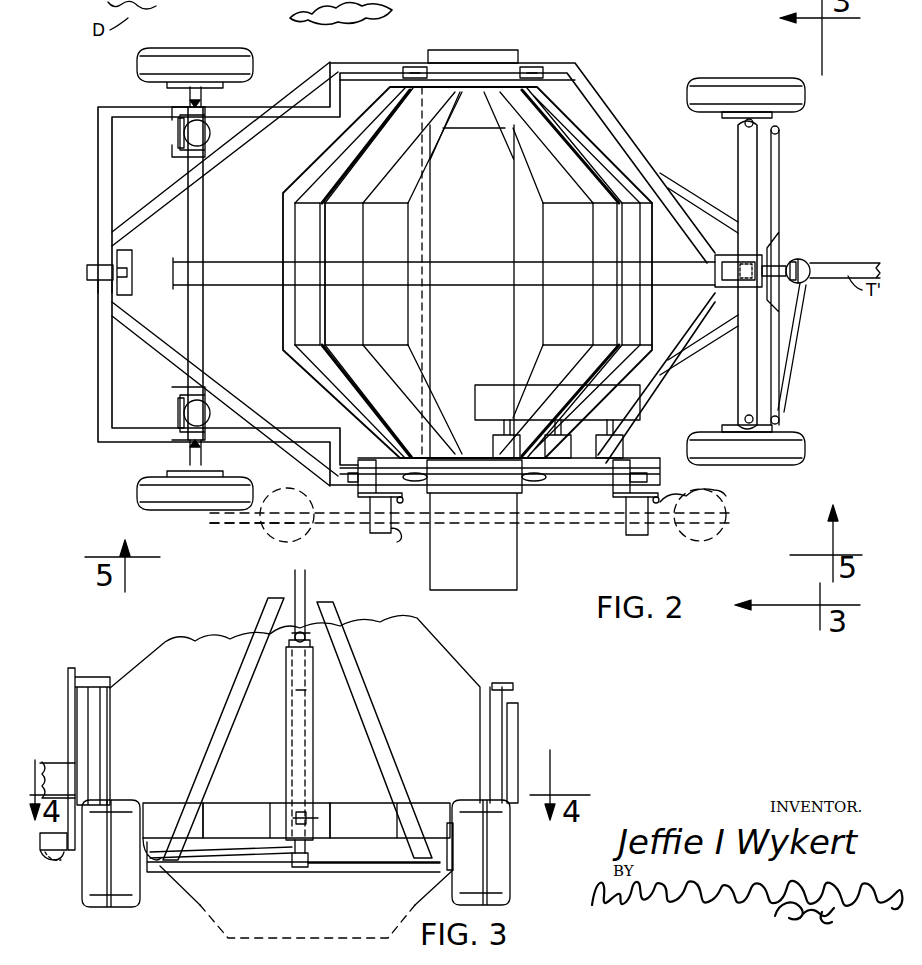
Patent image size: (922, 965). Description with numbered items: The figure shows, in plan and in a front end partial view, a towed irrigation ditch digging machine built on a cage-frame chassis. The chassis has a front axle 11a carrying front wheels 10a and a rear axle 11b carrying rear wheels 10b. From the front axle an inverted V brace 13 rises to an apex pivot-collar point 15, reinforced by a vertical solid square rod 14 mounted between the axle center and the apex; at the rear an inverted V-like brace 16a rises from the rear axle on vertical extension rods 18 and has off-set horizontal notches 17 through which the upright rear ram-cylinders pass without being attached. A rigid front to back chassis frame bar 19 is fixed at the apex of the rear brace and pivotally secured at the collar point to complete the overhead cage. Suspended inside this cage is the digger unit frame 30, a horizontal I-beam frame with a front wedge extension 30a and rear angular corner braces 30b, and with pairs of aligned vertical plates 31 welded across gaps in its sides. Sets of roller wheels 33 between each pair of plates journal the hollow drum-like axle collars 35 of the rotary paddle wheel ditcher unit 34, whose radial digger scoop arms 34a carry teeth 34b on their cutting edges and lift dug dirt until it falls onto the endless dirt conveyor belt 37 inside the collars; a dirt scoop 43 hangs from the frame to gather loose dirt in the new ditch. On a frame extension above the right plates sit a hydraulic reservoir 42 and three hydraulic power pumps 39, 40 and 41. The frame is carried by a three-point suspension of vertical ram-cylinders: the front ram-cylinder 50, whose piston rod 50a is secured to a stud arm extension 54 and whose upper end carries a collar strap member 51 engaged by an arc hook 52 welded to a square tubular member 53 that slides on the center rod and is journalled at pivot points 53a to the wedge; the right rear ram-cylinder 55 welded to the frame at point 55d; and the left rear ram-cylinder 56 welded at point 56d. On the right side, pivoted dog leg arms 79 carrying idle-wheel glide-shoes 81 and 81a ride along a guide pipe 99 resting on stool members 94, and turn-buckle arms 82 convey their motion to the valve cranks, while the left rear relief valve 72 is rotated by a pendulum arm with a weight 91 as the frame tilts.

In FIG. 2, the front wheels 10a is at (736, 82).
In FIG. 3, the front wheels 10a is at (126, 902).
In FIG. 2, the rear wheels 10b is at (186, 60).
In FIG. 3, the front axle 11a is at (364, 866).
In FIG. 2, the rear axle 11b is at (202, 90).
In FIG. 2, the inverted V brace 13 is at (758, 196).
In FIG. 3, the inverted V brace 13 is at (226, 722).
In FIG. 3, the vertical solid square rod 14 is at (304, 582).
In FIG. 2, the apex pivot-collar point 15 is at (760, 252).
In FIG. 2, the rear inverted V-like brace 16a is at (204, 226).
In FIG. 2, the off-set horizontal notches 17 is at (172, 148).
In FIG. 2, the vertical extension rods 18 is at (188, 100).
In FIG. 2, the front to back chassis frame bar 19 is at (444, 266).
In FIG. 2, the digger unit frame 30 is at (98, 172).
In FIG. 3, the digger unit frame 30 is at (150, 802).
In FIG. 2, the horizontal front wedge extension 30a is at (720, 198).
In FIG. 3, the horizontal front wedge extension 30a is at (218, 804).
In FIG. 2, the rear angular corner horizontal braces 30b is at (250, 130).
In FIG. 2, the vertical plates 31 is at (338, 62).
In FIG. 3, the vertical plates 31 is at (100, 754).
In FIG. 2, the roller wheels 33 is at (382, 70).
In FIG. 2, the rotary paddle wheel ditcher unit 34 is at (308, 166).
In FIG. 2, the radial digger scoop arms 34a is at (320, 238).
In FIG. 2, the teeth 34b is at (322, 214).
In FIG. 2, the axle collars 35 is at (490, 62).
In FIG. 2, the endless dirt conveyor belt 37 is at (496, 574).
In FIG. 2, the hydraulic power pump 39 is at (506, 436).
In FIG. 2, the hydraulic power pump 40 is at (552, 436).
In FIG. 2, the hydraulic power pump 41 is at (600, 434).
In FIG. 2, the hydraulic reservoir 42 is at (630, 410).
In FIG. 2, the dirt scoop 43 is at (312, 96).
In FIG. 3, the dirt scoop 43 is at (198, 908).
In FIG. 2, the front hydraulic ram-cylinder 50 is at (804, 268).
In FIG. 3, the front hydraulic ram-cylinder 50 is at (314, 728).
In FIG. 3, the piston rod 50a is at (292, 847).
In FIG. 2, the collar strap member 51 is at (810, 268).
In FIG. 3, the collar strap member 51 is at (314, 644).
In FIG. 2, the arc hook 52 is at (792, 262).
In FIG. 3, the arc hook 52 is at (310, 634).
In FIG. 2, the square tubular elongated member 53 is at (742, 290).
In FIG. 3, the square tubular elongated member 53 is at (306, 698).
In FIG. 3, the pivot points 53a is at (318, 820).
In FIG. 3, the rigid stud arm extension 54 is at (300, 868).
In FIG. 2, the right rear hydraulic ram-cylinder 55 is at (208, 410).
In FIG. 2, the welding point 55d is at (178, 412).
In FIG. 2, the left rear hydraulic ram-cylinder 56 is at (212, 128).
In FIG. 2, the welding point 56d is at (178, 131).
In FIG. 2, the relief valve 72 is at (94, 282).
In FIG. 2, the dog leg arms 79 is at (364, 494).
In FIG. 2, the idle-wheel glide-shoe 81 is at (404, 533).
In FIG. 2, the idle-wheel glide-shoe 81a is at (632, 531).
In FIG. 2, the turn-buckle arm 82 is at (718, 496).
In FIG. 2, the weight 91 is at (122, 236).
In FIG. 2, the stool members 94 is at (260, 528).
In FIG. 2, the guide pipe 99 is at (208, 523).